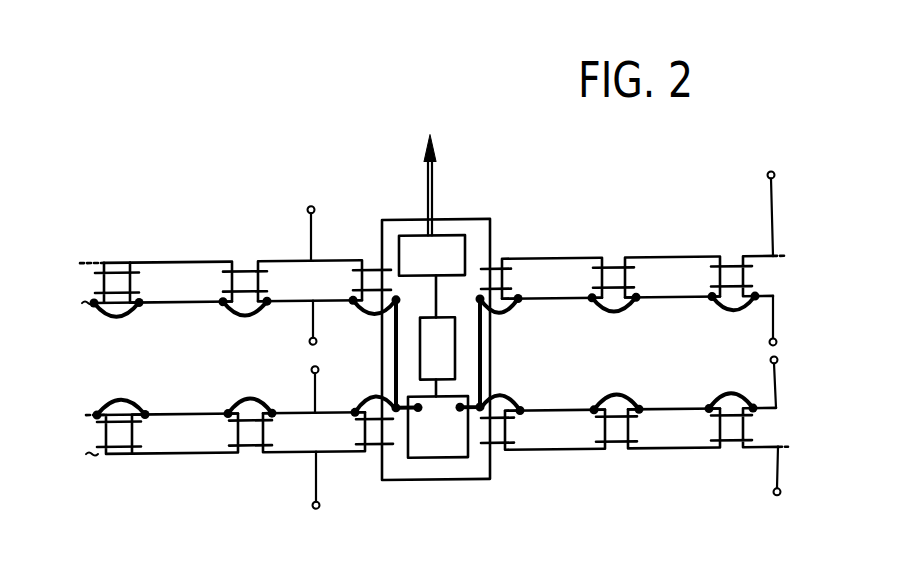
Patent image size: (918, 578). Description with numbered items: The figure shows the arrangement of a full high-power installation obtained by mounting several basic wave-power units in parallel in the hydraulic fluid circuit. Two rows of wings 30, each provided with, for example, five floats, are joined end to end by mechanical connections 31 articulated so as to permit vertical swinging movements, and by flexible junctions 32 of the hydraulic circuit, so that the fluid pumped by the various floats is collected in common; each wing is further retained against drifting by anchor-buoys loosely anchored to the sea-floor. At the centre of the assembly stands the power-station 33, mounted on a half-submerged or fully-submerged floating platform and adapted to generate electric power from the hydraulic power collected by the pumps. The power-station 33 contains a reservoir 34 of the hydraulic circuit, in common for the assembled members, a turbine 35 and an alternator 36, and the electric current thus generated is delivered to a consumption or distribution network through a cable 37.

The wing 30 is at (173, 277).
The mechanical connection 31 is at (613, 272).
The flexible junction 32 is at (607, 320).
The power-station 33 is at (491, 236).
The reservoir 34 is at (450, 445).
The turbine 35 is at (438, 352).
The alternator 36 is at (417, 252).
The cable 37 is at (431, 187).